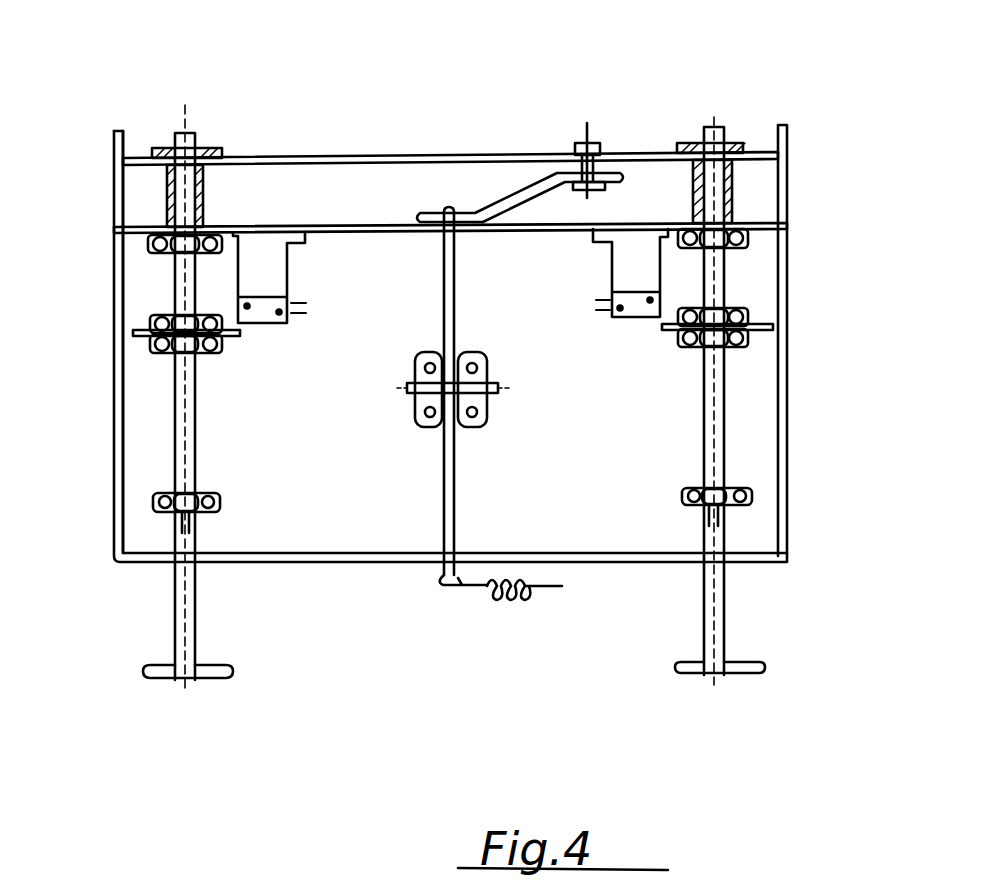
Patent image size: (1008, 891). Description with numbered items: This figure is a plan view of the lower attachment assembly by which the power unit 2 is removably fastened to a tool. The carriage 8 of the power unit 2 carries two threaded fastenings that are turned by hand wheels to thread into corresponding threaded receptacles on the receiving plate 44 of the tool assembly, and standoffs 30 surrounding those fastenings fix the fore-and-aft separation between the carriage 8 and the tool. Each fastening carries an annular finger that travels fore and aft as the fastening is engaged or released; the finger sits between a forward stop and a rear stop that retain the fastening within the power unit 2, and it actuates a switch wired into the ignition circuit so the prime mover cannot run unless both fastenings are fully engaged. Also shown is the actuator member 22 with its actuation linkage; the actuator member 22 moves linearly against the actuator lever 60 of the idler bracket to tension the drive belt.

The power unit 2 is at (130, 562).
The carriage 8 is at (587, 222).
The actuator member 22 is at (370, 321).
The standoffs 30 is at (730, 200).
The receiving plate 44 is at (503, 153).
The actuator lever 60 is at (449, 128).